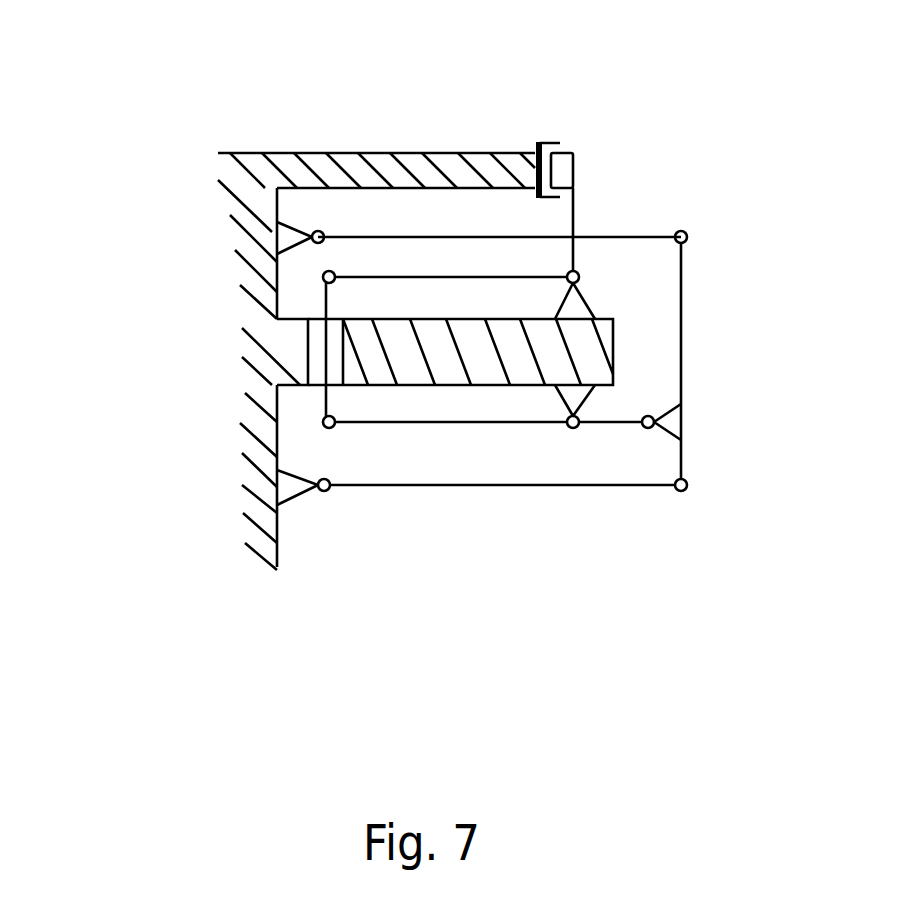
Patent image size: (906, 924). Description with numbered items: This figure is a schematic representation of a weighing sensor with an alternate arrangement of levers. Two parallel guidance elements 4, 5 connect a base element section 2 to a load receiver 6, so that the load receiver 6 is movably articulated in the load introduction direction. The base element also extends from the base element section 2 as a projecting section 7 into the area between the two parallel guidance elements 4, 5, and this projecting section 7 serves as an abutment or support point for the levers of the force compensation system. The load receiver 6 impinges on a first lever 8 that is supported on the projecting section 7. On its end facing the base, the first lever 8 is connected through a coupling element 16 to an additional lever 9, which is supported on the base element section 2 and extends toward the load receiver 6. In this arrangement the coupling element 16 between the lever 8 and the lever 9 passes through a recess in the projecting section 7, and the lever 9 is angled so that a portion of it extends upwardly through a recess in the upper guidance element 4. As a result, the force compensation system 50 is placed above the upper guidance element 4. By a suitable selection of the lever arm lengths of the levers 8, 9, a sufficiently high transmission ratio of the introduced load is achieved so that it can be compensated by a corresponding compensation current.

The base element section 2 is at (256, 322).
The upper parallel guidance element 4 is at (625, 237).
The lower parallel guidance element 5 is at (358, 485).
The load receiver 6 is at (681, 340).
The projecting section 7 is at (507, 368).
The first lever 8 is at (495, 418).
The additional lever 9 is at (482, 282).
The coupling element 16 is at (325, 362).
The force compensation system 50 is at (562, 173).